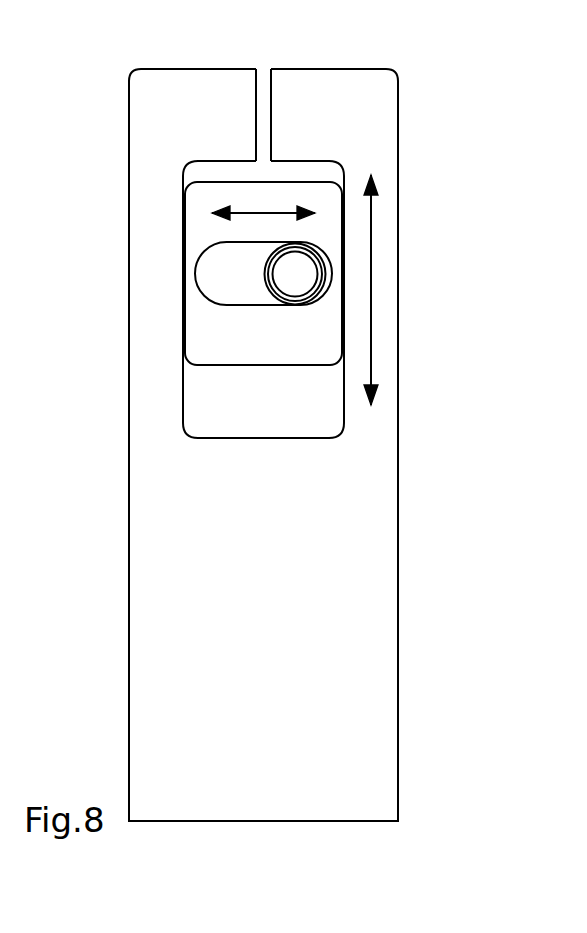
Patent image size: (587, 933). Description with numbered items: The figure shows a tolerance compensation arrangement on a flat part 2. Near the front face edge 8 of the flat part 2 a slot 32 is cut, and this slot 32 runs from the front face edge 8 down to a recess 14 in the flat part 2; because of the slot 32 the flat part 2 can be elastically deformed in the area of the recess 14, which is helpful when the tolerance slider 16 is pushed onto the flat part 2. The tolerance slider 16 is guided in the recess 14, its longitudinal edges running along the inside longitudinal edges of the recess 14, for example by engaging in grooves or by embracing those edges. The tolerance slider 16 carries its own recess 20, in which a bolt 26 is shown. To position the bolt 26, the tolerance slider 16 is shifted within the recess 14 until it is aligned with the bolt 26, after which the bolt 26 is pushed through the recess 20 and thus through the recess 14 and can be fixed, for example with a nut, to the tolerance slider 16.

The flat part 2 is at (375, 509).
The front face edge 8 is at (313, 68).
The recess 14 is at (305, 404).
The tolerance slider 16 is at (202, 225).
The recess 20 is at (235, 278).
The bolt 26 is at (298, 273).
The slot 32 is at (263, 85).